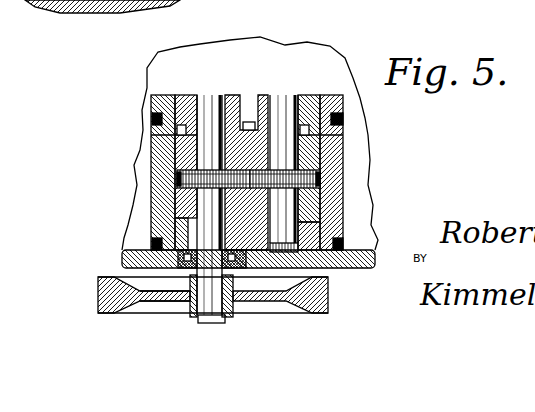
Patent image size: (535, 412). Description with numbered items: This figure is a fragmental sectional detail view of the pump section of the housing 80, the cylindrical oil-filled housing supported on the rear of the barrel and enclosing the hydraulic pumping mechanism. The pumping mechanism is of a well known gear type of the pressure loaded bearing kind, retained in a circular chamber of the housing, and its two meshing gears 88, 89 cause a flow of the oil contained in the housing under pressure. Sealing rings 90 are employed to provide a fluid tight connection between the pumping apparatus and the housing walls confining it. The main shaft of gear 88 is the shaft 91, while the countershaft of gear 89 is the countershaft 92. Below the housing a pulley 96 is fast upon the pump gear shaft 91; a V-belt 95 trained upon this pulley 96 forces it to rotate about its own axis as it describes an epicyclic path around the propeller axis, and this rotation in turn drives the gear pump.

The housing 80 is at (363, 143).
The gear 88 is at (177, 178).
The gear 89 is at (337, 182).
The sealing rings 90 is at (156, 113).
The main shaft 91 is at (212, 102).
The countershaft 92 is at (287, 100).
The V-belt 95 is at (100, 292).
The pulley 96 is at (143, 299).